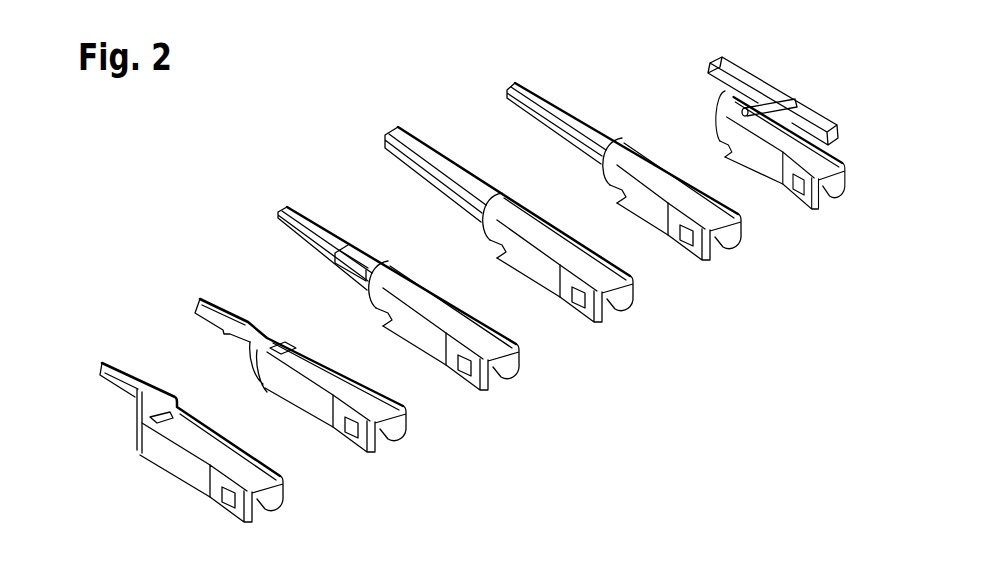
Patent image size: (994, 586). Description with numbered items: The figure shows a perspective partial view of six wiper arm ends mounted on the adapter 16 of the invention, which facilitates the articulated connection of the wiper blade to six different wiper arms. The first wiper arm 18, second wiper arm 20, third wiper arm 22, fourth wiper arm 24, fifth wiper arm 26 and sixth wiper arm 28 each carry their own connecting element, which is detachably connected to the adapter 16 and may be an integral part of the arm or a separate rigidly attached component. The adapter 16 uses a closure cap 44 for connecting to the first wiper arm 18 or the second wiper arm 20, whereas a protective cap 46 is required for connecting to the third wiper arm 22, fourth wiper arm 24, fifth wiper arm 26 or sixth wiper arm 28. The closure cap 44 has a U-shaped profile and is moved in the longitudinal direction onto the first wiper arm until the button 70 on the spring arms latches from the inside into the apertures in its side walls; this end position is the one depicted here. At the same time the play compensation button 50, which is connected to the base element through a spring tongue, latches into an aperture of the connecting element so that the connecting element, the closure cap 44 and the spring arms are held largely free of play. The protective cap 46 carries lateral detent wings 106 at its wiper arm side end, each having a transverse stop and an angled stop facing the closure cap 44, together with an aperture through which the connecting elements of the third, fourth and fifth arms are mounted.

The adapter 16 is at (284, 510).
The first wiper arm 18 is at (110, 360).
The second wiper arm 20 is at (215, 298).
The third wiper arm 22 is at (286, 206).
The fourth wiper arm 24 is at (400, 126).
The fifth wiper arm 26 is at (514, 86).
The sixth wiper arm 28 is at (745, 71).
The closure cap 44 is at (250, 473).
The protective cap 46 is at (430, 302).
The play compensation button 50 is at (173, 416).
The button 70 is at (227, 503).
The detent wing 106 is at (378, 316).